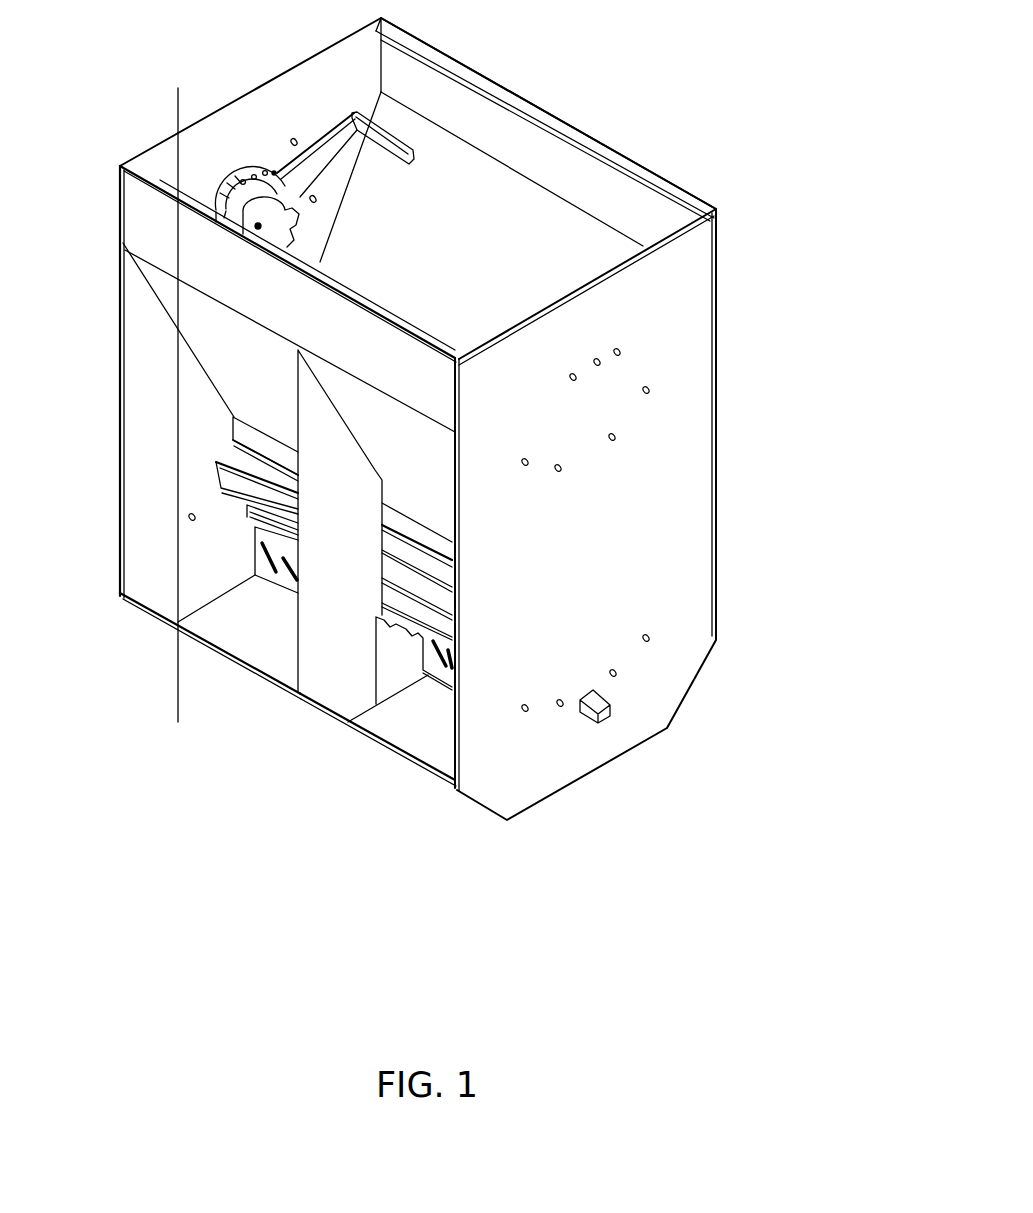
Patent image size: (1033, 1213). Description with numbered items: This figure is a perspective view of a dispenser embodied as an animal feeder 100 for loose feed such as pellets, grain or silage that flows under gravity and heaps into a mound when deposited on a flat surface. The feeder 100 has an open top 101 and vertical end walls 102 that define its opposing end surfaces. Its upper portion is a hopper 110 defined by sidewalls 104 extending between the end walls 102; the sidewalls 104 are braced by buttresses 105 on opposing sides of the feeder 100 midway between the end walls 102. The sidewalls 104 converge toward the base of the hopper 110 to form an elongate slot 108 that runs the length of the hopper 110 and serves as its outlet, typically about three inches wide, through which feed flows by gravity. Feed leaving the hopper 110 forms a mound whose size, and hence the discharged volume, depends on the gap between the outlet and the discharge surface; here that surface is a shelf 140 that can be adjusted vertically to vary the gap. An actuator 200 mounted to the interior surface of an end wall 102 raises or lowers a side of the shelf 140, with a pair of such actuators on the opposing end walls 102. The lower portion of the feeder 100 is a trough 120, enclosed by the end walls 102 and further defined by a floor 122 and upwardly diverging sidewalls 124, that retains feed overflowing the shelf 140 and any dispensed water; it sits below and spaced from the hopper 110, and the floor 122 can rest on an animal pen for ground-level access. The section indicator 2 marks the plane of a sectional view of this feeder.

The animal feeder 100 is at (783, 340).
The open top 101 is at (455, 177).
The vertical end walls 102 is at (138, 460).
The sidewalls 104 is at (468, 249).
The buttresses 105 is at (310, 653).
The elongate slot 108 is at (420, 553).
The hopper 110 is at (595, 243).
The trough 120 is at (270, 680).
The floor 122 is at (437, 750).
The upwardly diverging sidewalls 124 is at (415, 760).
The shelf 140 is at (227, 456).
The actuator 200 is at (263, 167).
The section line 2 is at (178, 88).